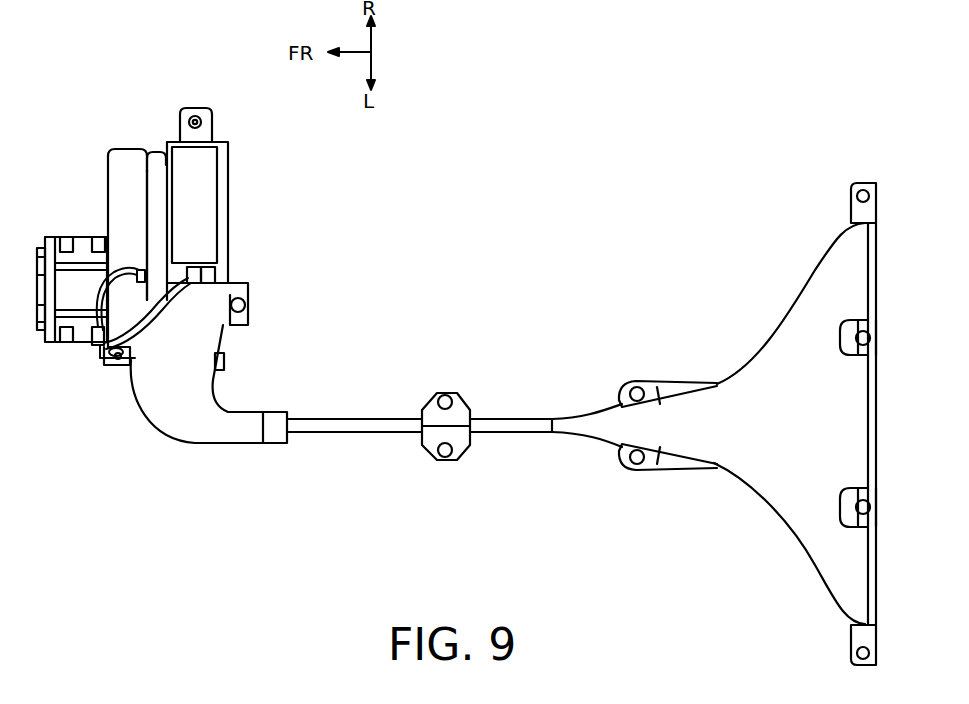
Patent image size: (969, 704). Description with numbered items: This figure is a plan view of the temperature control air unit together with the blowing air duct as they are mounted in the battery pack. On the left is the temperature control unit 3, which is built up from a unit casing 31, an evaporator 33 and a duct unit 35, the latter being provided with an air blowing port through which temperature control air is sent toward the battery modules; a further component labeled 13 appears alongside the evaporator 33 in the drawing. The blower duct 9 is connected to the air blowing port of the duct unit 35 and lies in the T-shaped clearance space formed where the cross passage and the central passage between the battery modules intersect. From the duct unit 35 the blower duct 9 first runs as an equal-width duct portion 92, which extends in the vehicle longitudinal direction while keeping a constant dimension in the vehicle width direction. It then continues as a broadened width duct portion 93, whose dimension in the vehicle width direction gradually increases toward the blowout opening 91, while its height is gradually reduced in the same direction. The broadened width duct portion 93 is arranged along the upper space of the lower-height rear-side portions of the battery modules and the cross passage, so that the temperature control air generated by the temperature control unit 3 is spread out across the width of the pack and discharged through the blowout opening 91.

The temperature control unit 3 is at (150, 132).
The evaporator 33 is at (122, 188).
The unit casing 31 is at (200, 210).
The pump 13 is at (77, 295).
The duct unit 35 is at (180, 418).
The blower duct 9 is at (672, 308).
The equal-width duct portion 92 is at (493, 423).
The broadened width duct portion 93 is at (752, 383).
The blowout opening 91 is at (872, 270).